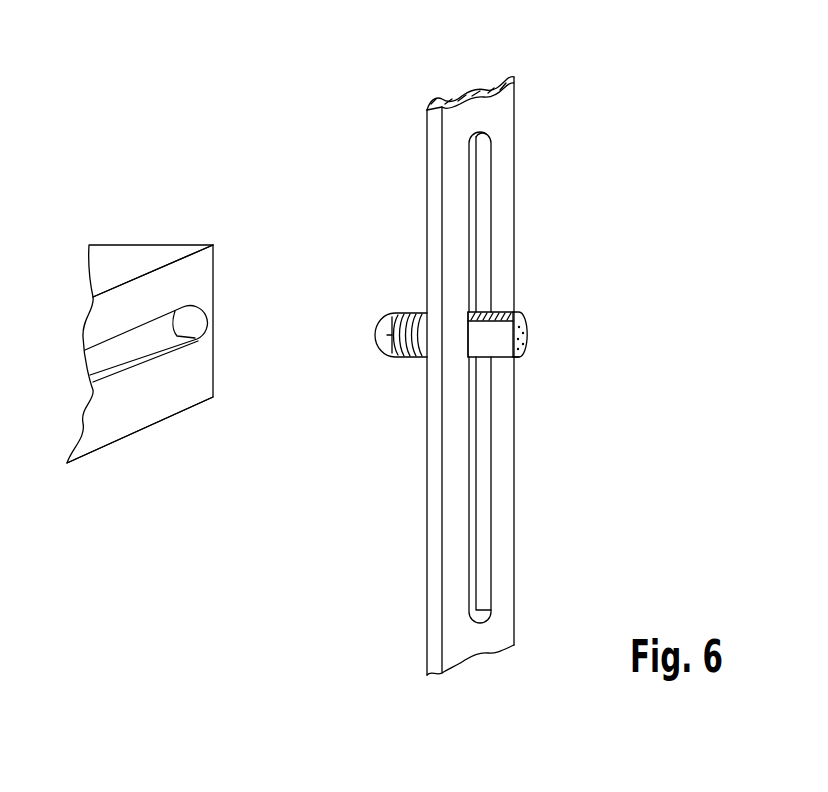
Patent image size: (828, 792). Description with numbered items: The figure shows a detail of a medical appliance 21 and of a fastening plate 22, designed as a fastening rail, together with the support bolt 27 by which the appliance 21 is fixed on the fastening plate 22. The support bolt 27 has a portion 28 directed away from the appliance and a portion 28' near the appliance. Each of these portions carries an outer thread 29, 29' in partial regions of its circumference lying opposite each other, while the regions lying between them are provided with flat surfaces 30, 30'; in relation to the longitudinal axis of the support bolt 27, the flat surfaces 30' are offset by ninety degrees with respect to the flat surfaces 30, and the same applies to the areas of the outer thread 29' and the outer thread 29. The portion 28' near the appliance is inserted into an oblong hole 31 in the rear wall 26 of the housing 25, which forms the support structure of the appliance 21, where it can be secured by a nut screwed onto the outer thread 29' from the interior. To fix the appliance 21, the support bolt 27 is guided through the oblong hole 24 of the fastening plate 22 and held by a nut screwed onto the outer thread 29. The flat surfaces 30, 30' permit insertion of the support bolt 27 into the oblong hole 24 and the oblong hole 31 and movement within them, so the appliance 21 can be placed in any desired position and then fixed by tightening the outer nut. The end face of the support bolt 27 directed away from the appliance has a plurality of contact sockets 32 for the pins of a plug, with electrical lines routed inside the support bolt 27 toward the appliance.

The appliance 21 is at (158, 206).
The fastening plate 22 is at (545, 110).
The oblong hole 24 is at (480, 170).
The housing 25 is at (182, 252).
The rear wall 26 is at (202, 390).
The support bolt 27 is at (472, 337).
The portion directed away from the appliance 28 is at (522, 280).
The portion near the appliance 28' is at (387, 403).
The outer thread 29 is at (566, 323).
The outer thread 29' is at (359, 362).
The flat surfaces 30 is at (518, 380).
The flat surfaces 30' is at (395, 300).
The oblong hole 31 is at (197, 325).
The contact sockets 32 is at (513, 345).